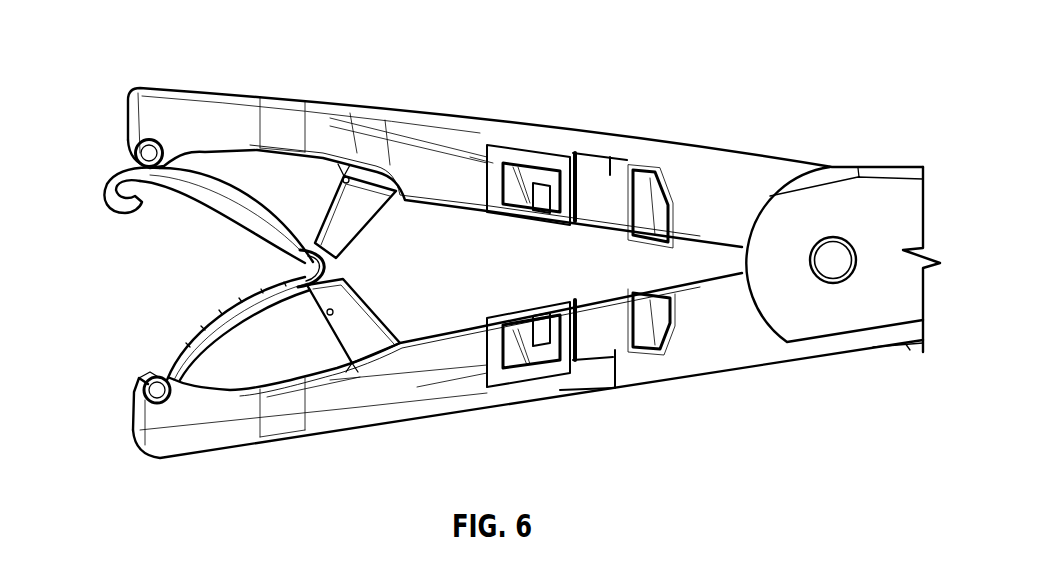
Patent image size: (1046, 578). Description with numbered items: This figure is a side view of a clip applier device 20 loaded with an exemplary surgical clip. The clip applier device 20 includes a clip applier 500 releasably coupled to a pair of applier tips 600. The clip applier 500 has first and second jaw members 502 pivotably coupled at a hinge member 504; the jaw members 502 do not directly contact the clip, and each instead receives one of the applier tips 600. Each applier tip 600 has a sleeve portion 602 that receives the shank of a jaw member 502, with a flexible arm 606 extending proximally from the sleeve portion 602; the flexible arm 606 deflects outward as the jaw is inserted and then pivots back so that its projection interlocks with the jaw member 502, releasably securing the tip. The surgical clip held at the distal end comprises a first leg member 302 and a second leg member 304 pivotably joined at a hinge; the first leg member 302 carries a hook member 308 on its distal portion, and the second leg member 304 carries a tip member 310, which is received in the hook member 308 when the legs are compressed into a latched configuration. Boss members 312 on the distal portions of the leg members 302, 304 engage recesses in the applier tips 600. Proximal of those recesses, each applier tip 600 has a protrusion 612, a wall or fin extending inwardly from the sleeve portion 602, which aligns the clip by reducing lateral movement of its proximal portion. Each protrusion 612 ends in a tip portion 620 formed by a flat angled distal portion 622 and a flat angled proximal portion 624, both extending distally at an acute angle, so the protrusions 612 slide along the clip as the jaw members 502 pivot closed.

The clip applier device 20 is at (638, 437).
The first leg member 302 is at (235, 194).
The second leg member 304 is at (186, 52).
The hook member 308 is at (115, 205).
The tip member 310 is at (143, 378).
The boss member 312 is at (136, 148).
The clip applier 500 is at (878, 130).
The jaw member 502 is at (705, 158).
The hinge member 504 is at (837, 311).
The applier tip 600 is at (399, 83).
The sleeve portion 602 is at (528, 134).
The flexible arm 606 is at (610, 207).
The protrusion 612 is at (340, 232).
The tip portion 620 is at (345, 180).
The flat angled distal portion 622 is at (343, 190).
The flat angled proximal portion 624 is at (385, 217).